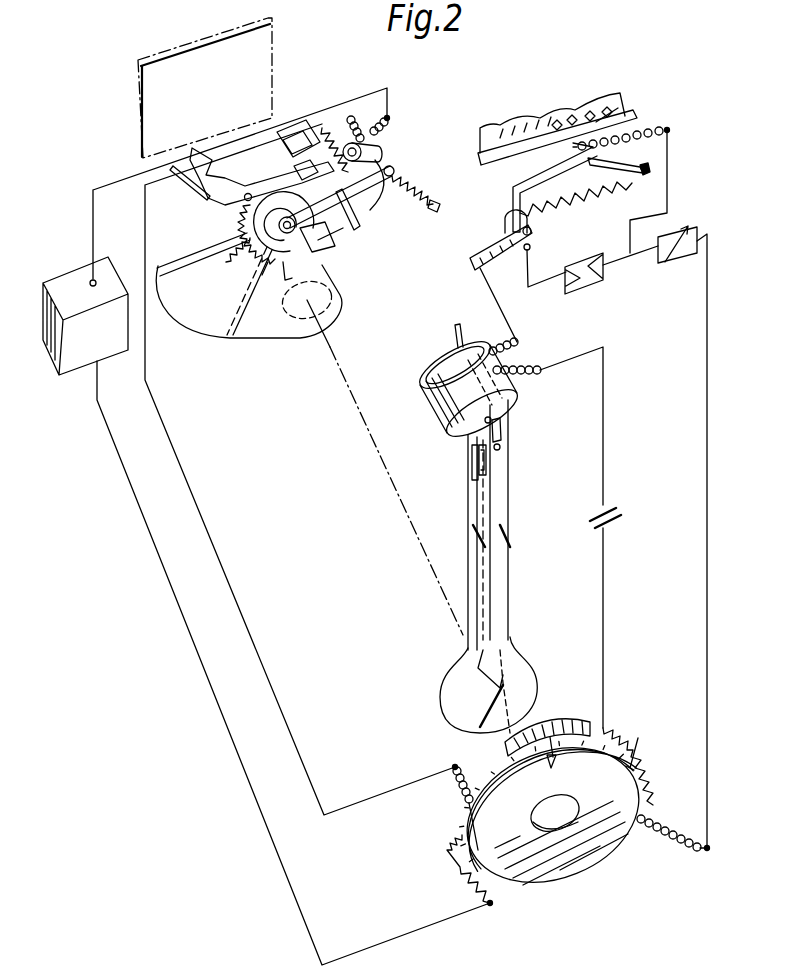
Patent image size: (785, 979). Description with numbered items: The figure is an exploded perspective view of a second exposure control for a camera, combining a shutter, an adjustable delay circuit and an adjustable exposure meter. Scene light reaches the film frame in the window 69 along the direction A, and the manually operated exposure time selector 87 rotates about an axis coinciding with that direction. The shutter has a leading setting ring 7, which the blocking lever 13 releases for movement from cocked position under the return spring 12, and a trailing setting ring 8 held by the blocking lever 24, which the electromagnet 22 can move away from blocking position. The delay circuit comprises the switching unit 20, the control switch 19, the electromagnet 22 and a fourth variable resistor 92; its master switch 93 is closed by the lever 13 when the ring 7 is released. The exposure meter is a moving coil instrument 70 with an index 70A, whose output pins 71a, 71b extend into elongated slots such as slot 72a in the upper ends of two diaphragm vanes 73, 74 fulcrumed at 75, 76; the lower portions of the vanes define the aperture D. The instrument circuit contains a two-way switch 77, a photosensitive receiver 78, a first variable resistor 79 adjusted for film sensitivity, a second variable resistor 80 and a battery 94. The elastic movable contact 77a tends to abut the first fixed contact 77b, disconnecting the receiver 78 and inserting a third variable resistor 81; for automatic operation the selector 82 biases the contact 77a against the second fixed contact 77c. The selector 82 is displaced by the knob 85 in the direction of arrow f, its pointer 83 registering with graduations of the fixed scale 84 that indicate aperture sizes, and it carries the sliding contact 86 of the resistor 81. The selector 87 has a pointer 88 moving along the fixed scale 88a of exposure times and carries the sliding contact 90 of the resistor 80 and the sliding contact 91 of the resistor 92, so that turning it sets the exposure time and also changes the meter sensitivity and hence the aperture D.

The leading setting ring 7 is at (279, 268).
The trailing setting ring 8 is at (340, 215).
The return spring 12 is at (226, 262).
The blocking lever 13 is at (238, 203).
The control switch 19 is at (291, 136).
The switching unit 20 is at (112, 352).
The electromagnet 22 is at (376, 151).
The blocking lever 24 is at (368, 200).
The window 69 is at (265, 46).
The moving coil instrument 70 is at (440, 376).
The index 70A is at (473, 341).
The motion-transmitting pin 71a is at (504, 428).
The motion-transmitting pin 71b is at (476, 462).
The elongated slot 72a is at (503, 448).
The diaphragm vane 73 is at (471, 596).
The diaphragm vane 74 is at (505, 598).
The fulcrum 75 is at (478, 545).
The fulcrum 76 is at (510, 541).
The two-way switch 77 is at (513, 248).
The movable contact 77a is at (531, 240).
The first fixed contact 77b is at (505, 218).
The second fixed contact 77c is at (528, 288).
The photosensitive receiver 78 is at (598, 285).
The first variable resistor 79 is at (687, 519).
The second variable resistor 80 is at (641, 745).
The third variable resistor 81 is at (585, 205).
The selector 82 is at (510, 192).
The pointer 83 is at (585, 114).
The fixed scale 84 is at (540, 115).
The knob 85 is at (600, 118).
The sliding contact 86 is at (625, 167).
The exposure time selector 87 is at (535, 876).
The pointer 88 is at (553, 737).
The fixed scale 88a is at (585, 720).
The sliding contact 90 is at (628, 773).
The sliding contact 91 is at (478, 850).
The fourth variable resistor 92 is at (447, 850).
The master switch 93 is at (190, 197).
The battery 94 is at (620, 518).
The direction A- A is at (240, 163).
The aperture D is at (505, 697).
The arrow f is at (545, 85).